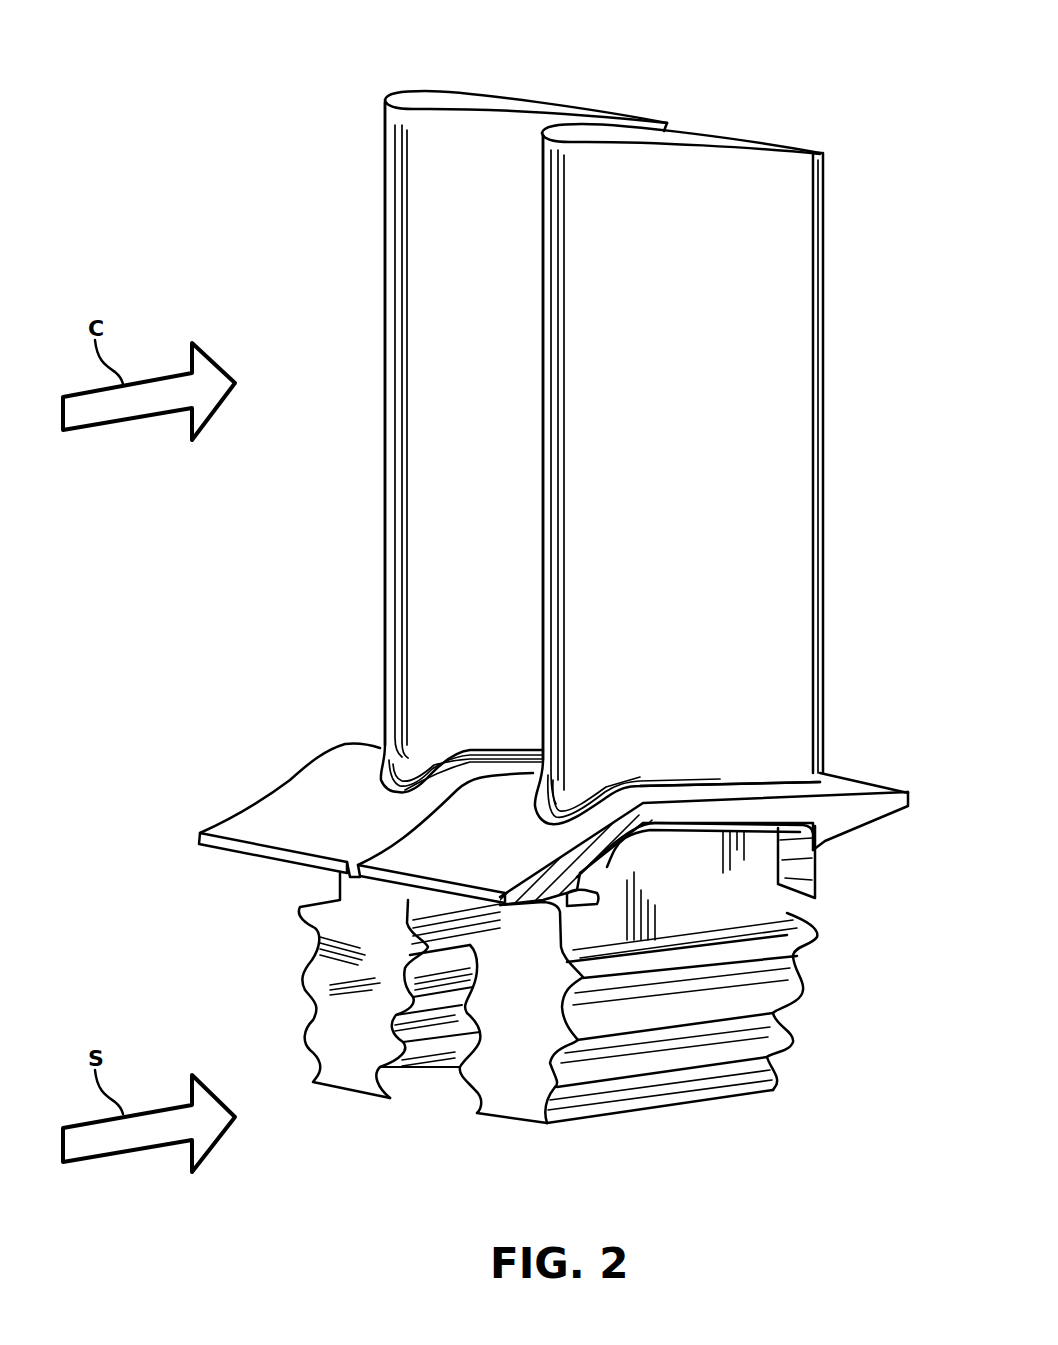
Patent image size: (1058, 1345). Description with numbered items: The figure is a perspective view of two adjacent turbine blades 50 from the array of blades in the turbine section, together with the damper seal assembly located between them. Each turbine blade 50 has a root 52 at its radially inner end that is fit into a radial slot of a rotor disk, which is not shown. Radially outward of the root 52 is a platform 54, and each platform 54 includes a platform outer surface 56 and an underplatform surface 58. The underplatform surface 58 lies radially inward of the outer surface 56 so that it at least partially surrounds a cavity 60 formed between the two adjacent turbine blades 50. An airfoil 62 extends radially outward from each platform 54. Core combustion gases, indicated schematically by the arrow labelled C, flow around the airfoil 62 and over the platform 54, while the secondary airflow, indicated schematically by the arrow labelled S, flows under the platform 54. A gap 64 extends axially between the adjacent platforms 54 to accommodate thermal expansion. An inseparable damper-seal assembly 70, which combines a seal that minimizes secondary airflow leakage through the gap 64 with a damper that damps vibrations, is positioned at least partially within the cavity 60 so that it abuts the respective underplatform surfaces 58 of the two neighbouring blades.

The turbine blade 50 is at (566, 84).
The root 52 is at (353, 1080).
The platform 54 is at (272, 866).
The platform outer surface 56 is at (293, 830).
The underplatform surface 58 is at (825, 844).
The cavity 60 is at (705, 909).
The airfoil 62 is at (423, 388).
The gap 64 is at (482, 772).
The inseparable damper-seal assembly 70 is at (678, 840).